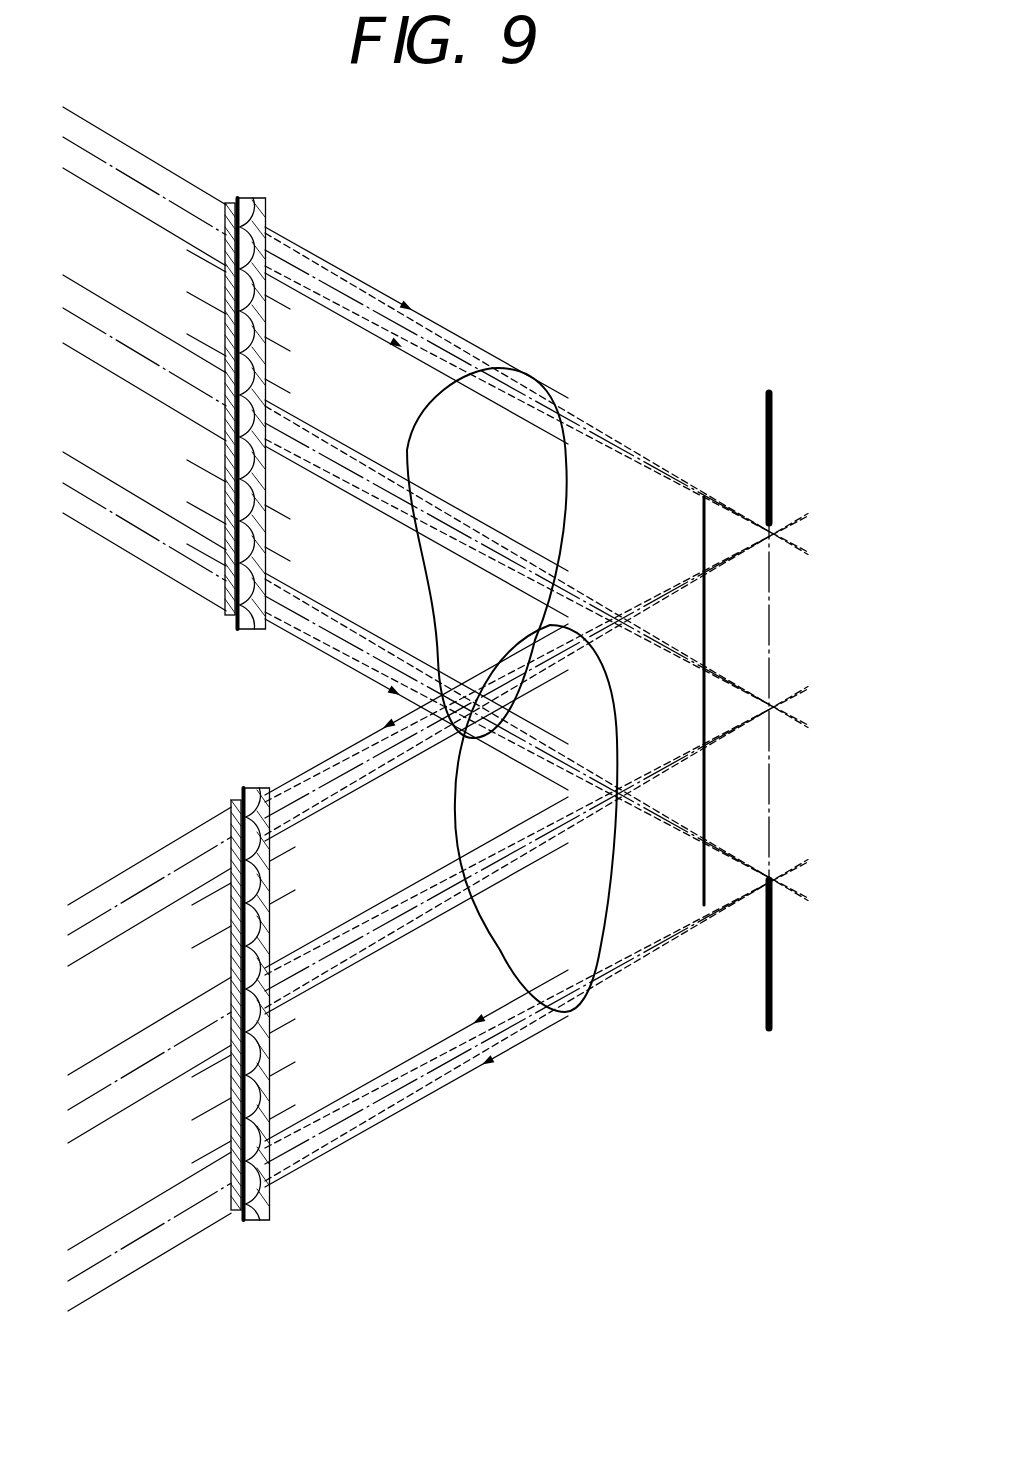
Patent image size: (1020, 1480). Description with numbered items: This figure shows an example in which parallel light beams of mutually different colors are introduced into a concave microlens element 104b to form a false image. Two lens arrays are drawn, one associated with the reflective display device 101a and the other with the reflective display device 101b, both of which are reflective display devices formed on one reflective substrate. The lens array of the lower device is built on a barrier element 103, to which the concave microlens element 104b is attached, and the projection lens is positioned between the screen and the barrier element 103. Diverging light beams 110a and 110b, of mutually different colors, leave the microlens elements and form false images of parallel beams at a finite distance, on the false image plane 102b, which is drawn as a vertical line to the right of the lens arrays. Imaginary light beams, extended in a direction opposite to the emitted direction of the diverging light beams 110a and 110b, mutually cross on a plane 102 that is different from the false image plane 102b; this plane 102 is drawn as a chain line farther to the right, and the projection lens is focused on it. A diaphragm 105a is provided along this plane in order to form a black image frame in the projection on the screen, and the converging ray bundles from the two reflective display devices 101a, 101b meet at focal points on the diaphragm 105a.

The reflective display device 101a is at (178, 197).
The reflective display device 101b is at (239, 1037).
The diverging light beam 110a is at (110, 541).
The diverging light beam 110b is at (126, 1283).
The plane 102 is at (774, 802).
The false image plane 102b is at (700, 895).
The barrier element 103 is at (237, 1212).
The concave microlens element 104b is at (306, 1008).
The diaphragm 105a is at (778, 995).